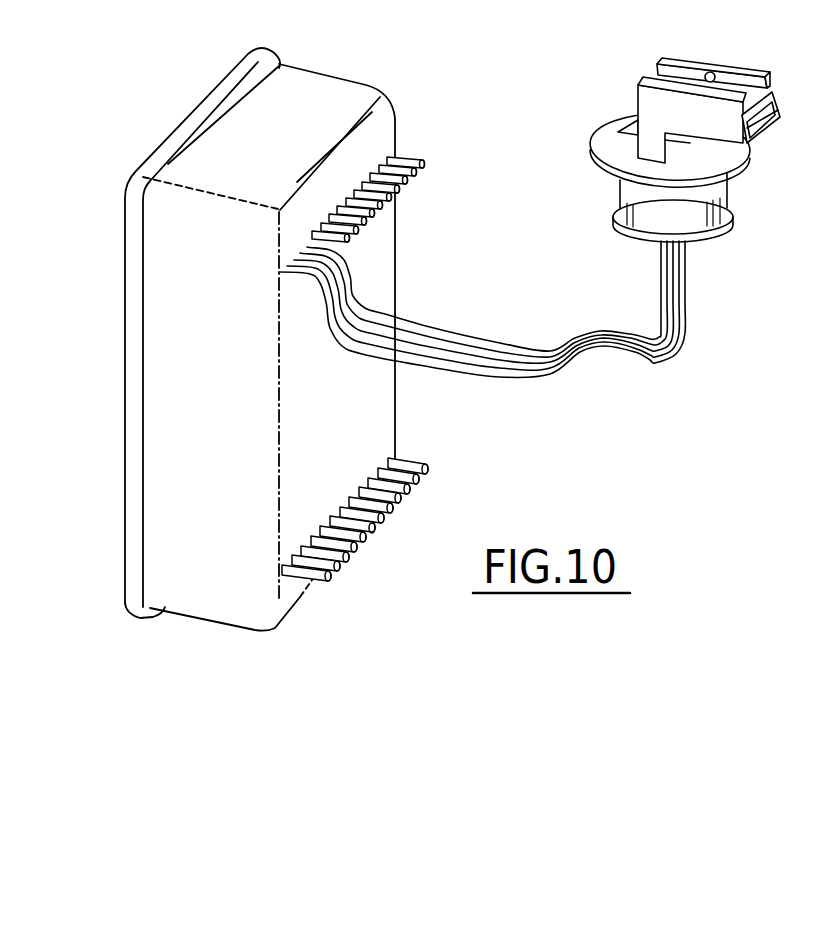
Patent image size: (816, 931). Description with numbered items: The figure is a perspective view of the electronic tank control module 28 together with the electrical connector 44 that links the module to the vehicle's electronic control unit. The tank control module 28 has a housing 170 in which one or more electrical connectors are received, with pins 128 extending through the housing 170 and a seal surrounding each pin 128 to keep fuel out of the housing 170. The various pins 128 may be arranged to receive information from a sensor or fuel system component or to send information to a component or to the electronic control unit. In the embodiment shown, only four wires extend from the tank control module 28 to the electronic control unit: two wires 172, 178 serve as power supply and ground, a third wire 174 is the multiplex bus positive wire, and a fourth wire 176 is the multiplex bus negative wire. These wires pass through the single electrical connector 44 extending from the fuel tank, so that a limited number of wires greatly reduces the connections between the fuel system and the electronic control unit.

The tank control module 28 is at (118, 316).
The housing 170 is at (160, 447).
The pins 128 is at (402, 150).
The wire 172 is at (482, 332).
The wire 174 is at (506, 380).
The wire 176 is at (478, 351).
The wire 178 is at (472, 361).
The electrical connector 44 is at (742, 186).